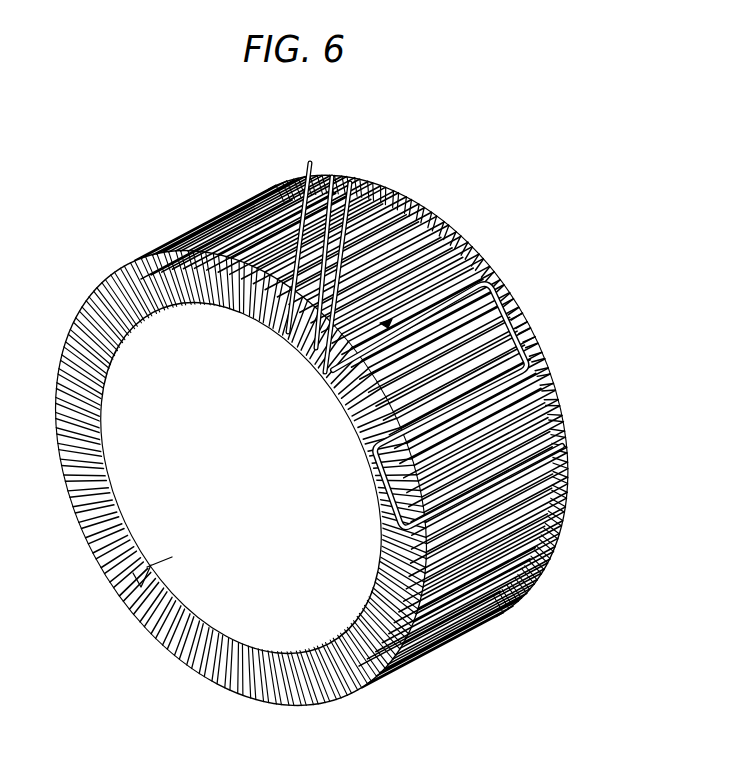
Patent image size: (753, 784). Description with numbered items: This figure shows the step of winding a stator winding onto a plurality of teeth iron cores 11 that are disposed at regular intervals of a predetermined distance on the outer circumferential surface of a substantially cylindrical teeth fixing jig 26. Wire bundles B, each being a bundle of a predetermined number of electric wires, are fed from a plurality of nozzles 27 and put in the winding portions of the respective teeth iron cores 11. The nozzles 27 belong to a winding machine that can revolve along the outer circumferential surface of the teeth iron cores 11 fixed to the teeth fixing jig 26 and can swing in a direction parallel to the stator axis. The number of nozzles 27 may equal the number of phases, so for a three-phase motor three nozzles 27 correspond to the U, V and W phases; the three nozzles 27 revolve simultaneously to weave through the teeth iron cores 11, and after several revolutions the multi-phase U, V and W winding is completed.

The teeth iron core 11 is at (102, 279).
The teeth fixing jig 26 is at (143, 567).
The nozzle 27 is at (341, 249).
The wire bundle B is at (500, 305).
The U phase U is at (297, 244).
The V phase V is at (329, 250).
The W phase W is at (355, 272).